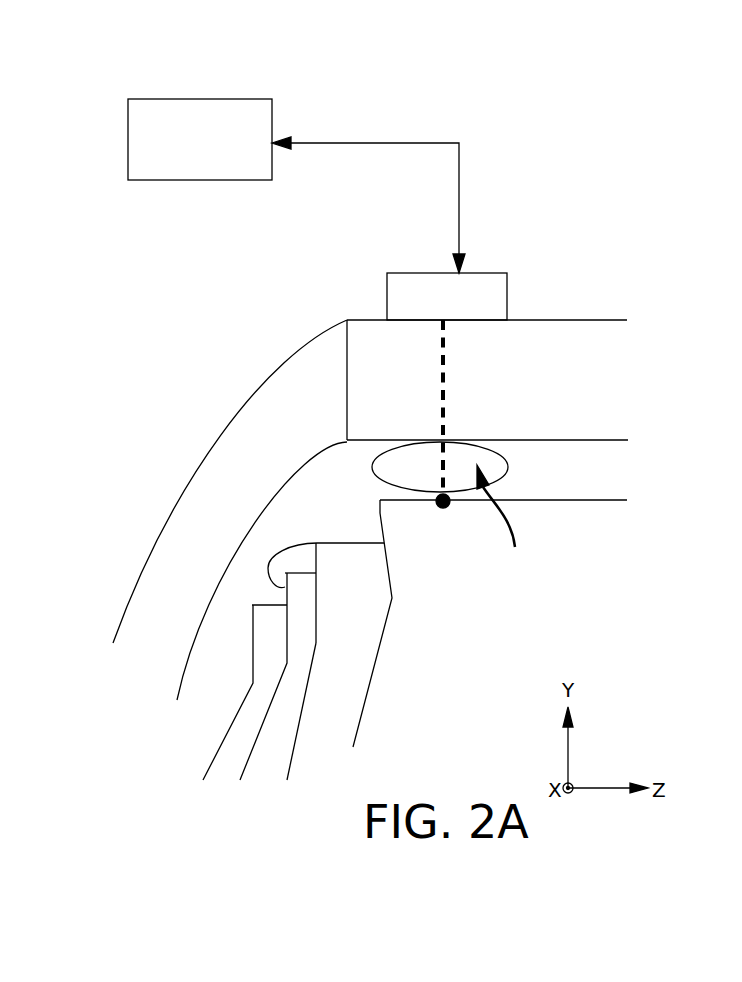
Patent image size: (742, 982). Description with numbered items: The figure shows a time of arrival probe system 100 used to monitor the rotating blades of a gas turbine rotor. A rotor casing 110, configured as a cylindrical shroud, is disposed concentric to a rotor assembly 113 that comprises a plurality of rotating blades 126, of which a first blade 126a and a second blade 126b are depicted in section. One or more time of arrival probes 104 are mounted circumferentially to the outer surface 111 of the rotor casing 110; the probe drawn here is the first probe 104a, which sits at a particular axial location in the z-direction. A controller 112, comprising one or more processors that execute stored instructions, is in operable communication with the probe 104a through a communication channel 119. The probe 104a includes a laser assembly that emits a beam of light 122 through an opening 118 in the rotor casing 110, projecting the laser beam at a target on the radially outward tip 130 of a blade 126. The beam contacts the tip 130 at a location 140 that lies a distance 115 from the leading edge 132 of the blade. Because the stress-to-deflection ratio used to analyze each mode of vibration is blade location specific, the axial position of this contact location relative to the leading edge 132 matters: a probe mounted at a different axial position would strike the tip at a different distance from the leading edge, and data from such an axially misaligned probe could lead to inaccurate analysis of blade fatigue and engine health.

The time of arrival probe system 100 is at (546, 91).
The controller 112 is at (200, 139).
The communication channel 119 is at (377, 143).
The time of arrival probe 104 is at (507, 273).
The first probe 104a is at (447, 296).
The outer surface 111 is at (590, 320).
The rotor casing 110 is at (243, 462).
The rotor assembly 113 is at (626, 477).
The beam of light 122 is at (447, 397).
The radially outward tip 130 is at (543, 500).
The distance 115 is at (443, 504).
The opening 118 is at (504, 519).
The location 140 is at (440, 513).
The leading edge 132 is at (380, 510).
The rotating blade 126 is at (365, 627).
The first blade 126a is at (242, 742).
The second blade 126b is at (287, 703).